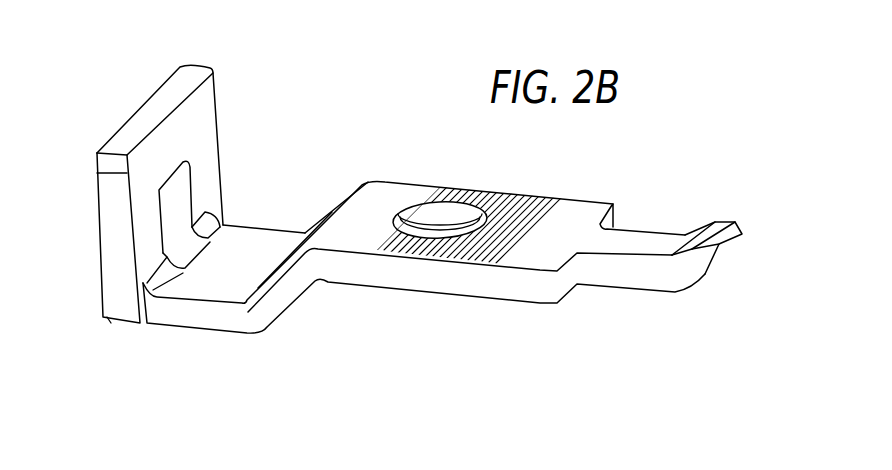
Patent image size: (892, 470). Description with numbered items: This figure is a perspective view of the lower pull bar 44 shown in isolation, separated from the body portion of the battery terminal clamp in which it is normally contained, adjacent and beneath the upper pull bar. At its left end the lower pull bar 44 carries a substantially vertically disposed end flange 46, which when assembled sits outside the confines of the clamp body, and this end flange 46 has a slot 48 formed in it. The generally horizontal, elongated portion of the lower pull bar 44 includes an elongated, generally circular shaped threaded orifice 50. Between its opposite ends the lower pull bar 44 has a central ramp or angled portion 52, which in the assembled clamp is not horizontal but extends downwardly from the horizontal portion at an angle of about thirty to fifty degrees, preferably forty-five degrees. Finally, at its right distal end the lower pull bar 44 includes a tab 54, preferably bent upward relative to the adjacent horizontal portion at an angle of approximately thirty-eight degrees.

The lower pull bar 44 is at (330, 348).
The end flange 46 is at (100, 226).
The slot 48 is at (177, 197).
The threaded orifice 50 is at (438, 228).
The central ramp 52 is at (288, 298).
The tab 54 is at (727, 240).